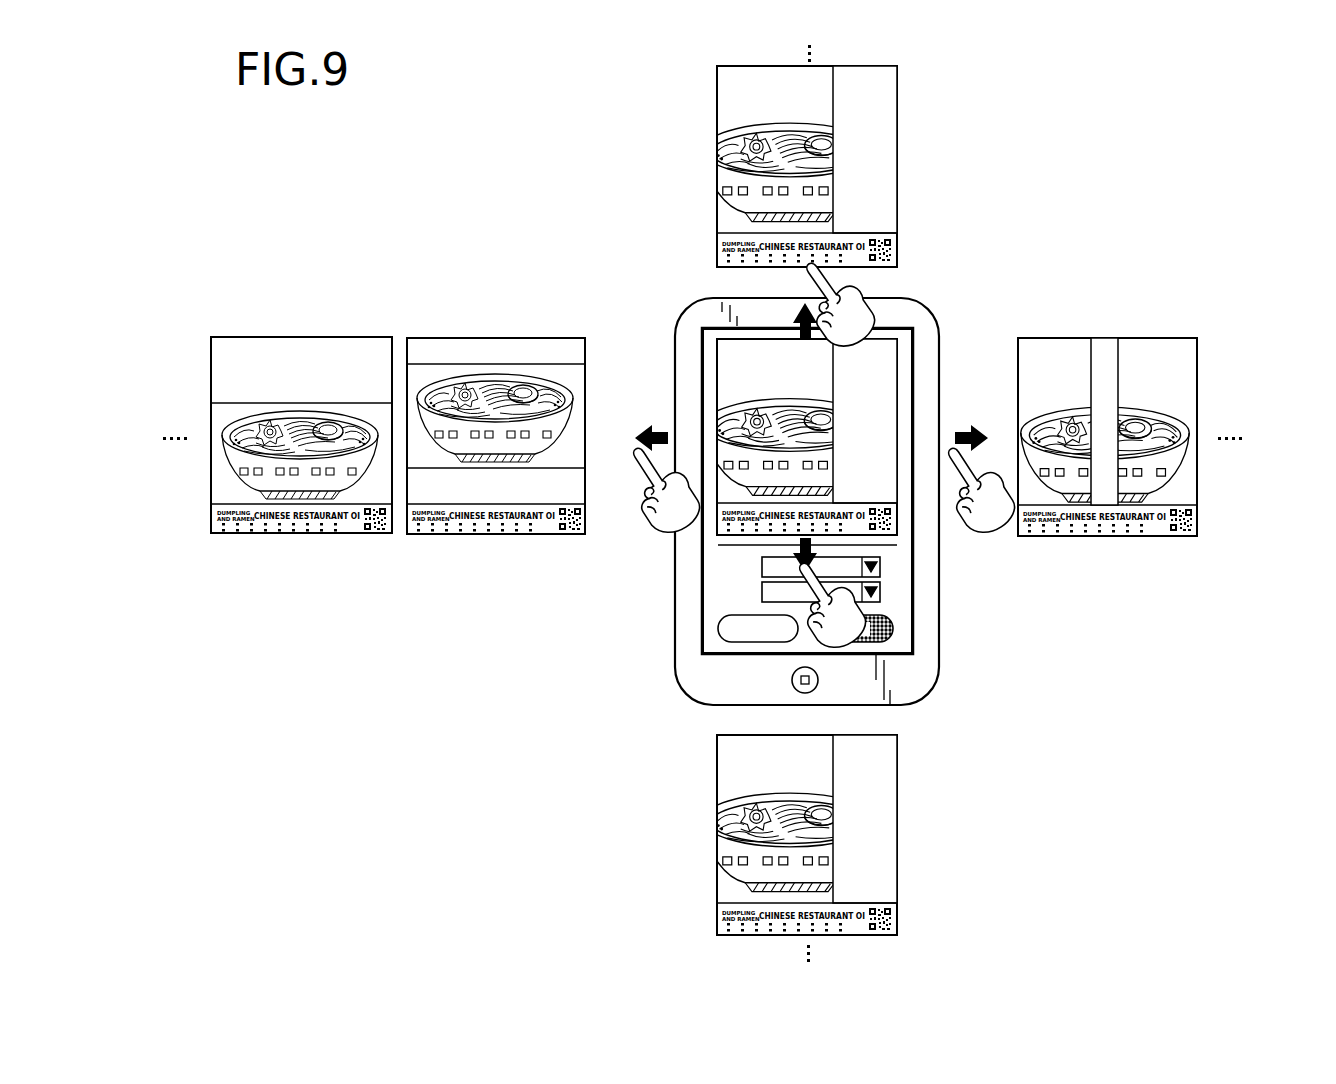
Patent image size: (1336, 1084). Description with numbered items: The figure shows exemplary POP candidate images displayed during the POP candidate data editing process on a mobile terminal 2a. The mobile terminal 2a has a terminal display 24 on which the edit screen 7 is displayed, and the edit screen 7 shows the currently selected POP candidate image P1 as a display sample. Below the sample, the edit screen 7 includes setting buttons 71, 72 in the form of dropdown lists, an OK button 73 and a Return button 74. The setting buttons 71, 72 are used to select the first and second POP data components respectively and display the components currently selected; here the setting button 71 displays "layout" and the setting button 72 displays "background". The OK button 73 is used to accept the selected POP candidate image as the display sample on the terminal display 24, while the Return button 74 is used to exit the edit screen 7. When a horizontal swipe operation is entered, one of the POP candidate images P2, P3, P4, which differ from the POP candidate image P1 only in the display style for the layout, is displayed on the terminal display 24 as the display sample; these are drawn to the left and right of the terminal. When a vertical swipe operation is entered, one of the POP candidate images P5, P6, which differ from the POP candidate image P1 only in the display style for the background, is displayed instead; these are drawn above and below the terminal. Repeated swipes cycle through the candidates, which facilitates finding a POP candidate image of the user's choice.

The mobile terminal 2a is at (965, 280).
The edit screen 7 is at (917, 377).
The terminal display 24 is at (908, 328).
The POP candidate image P1 is at (908, 410).
The POP candidate image P2 is at (357, 335).
The POP candidate image P3 is at (553, 335).
The POP candidate image P4 is at (1172, 335).
The POP candidate image P5 is at (900, 83).
The POP candidate image P6 is at (900, 768).
The setting button 71 is at (881, 600).
The setting button 72 is at (881, 574).
The OK button 73 is at (884, 641).
The Return button 74 is at (719, 630).